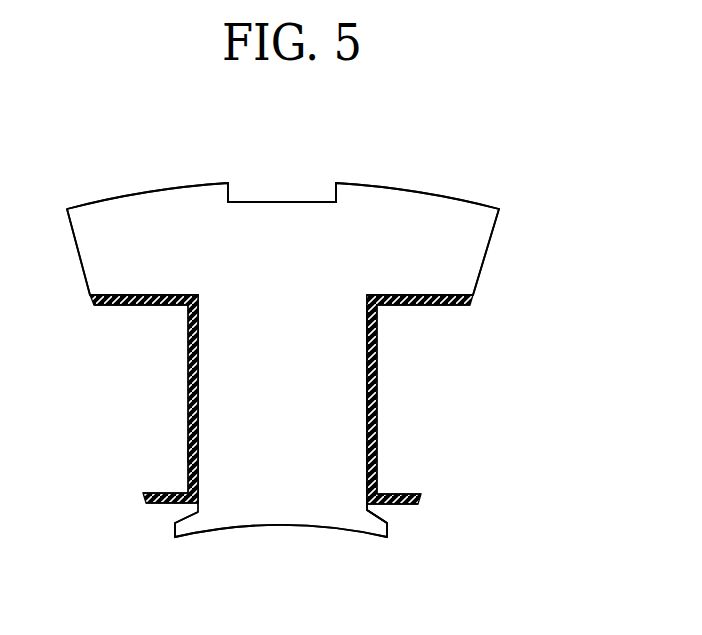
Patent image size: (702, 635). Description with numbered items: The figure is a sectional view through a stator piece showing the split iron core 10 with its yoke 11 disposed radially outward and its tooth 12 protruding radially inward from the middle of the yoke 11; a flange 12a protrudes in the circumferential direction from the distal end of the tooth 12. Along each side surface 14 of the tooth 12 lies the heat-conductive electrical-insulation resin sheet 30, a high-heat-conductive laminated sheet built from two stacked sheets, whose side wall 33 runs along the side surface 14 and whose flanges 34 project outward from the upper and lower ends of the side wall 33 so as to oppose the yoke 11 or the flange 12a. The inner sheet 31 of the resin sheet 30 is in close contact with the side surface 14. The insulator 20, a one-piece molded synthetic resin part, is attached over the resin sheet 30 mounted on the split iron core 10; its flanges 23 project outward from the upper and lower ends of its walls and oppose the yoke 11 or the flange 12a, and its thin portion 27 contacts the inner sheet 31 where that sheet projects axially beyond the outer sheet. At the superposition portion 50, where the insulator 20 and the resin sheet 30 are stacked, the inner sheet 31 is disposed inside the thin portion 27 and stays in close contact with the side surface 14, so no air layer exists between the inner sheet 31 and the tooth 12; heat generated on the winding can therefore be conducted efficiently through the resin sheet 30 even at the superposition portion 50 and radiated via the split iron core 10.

The split iron core 10 is at (375, 186).
The yoke 11 is at (423, 209).
The tooth 12 is at (297, 512).
The flange 12a is at (372, 537).
The side surface 14 is at (366, 508).
The insulator 20 is at (188, 397).
The flange 23 is at (463, 306).
The thin portion 27 is at (377, 435).
The heat-conductive electrical-insulation resin sheet 30 is at (188, 343).
The inner sheet 31 is at (367, 393).
The side wall 33 is at (367, 333).
The flange 34 is at (447, 295).
The superposition portion 50 is at (174, 451).